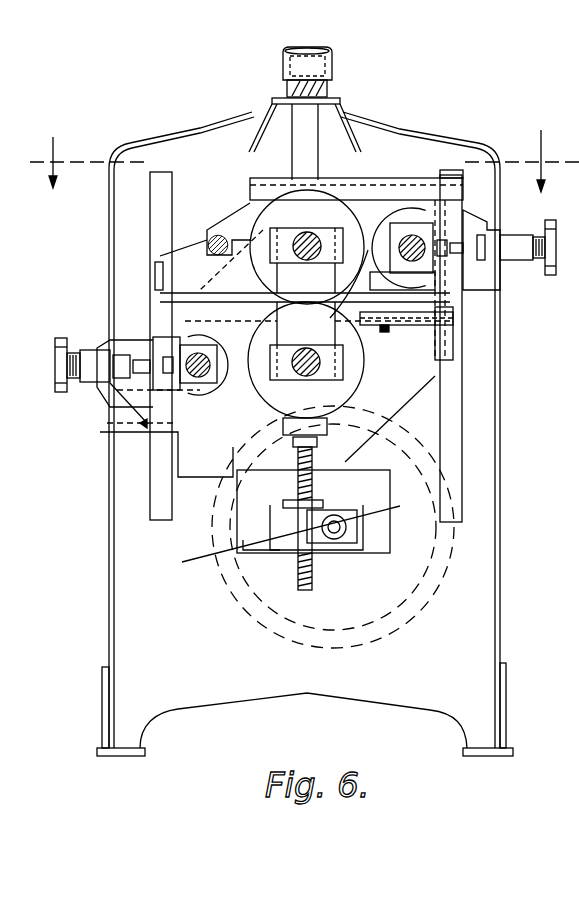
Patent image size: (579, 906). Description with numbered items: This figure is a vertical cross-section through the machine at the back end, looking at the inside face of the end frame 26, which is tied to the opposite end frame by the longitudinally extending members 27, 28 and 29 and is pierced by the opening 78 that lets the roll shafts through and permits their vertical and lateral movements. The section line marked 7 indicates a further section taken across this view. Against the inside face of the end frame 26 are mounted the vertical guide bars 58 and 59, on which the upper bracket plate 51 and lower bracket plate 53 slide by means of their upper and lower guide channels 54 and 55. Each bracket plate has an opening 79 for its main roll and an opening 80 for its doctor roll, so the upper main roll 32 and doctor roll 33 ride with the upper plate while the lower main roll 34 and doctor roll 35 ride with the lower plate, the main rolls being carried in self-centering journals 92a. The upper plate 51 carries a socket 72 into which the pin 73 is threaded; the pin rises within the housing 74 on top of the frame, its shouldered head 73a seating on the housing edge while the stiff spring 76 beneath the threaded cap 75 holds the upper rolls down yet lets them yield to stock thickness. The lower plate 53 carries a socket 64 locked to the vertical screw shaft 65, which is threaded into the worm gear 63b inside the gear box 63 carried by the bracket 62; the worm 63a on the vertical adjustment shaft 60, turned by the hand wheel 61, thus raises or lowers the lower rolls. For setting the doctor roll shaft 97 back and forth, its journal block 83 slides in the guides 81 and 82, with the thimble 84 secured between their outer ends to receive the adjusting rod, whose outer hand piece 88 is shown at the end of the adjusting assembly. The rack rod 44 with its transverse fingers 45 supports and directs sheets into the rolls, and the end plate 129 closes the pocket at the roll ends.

The end frame 26 is at (305, 434).
The longitudinally extending member 27 is at (383, 120).
The longitudinally extending member 28 is at (107, 660).
The longitudinally extending member 29 is at (506, 682).
The section line 7- 7 is at (304, 161).
The main roll 32 is at (250, 206).
The doctor roll 33 is at (463, 297).
The main roll 34 is at (450, 419).
The doctor roll 35 is at (207, 412).
The longitudinal rod or bar 44 is at (389, 330).
The transverse fingers 45 is at (467, 313).
The upper bracket plate 51 is at (190, 253).
The lower bracket plate 53 is at (222, 425).
The upper guide channel 54 is at (447, 190).
The lower guide channel 55 is at (153, 276).
The vertical guide bar 58 is at (158, 500).
The vertical guide bar 59 is at (450, 463).
The vertical adjustment shaft 60 is at (335, 540).
The hand wheel 61 is at (447, 573).
The bracket 62 is at (393, 532).
The gear box 63 is at (279, 540).
The worm 63a is at (414, 506).
The worm gear 63b is at (235, 588).
The socket 64 is at (316, 440).
The vertical screw shaft 65 is at (312, 490).
The socket 72 is at (283, 180).
The pin 73 is at (306, 150).
The shouldered head 73a is at (334, 62).
The housing 74 is at (289, 90).
The cap 75 is at (283, 62).
The stiff spring 76 is at (322, 50).
The opening 78 is at (398, 418).
The opening for main roll 79 is at (282, 280).
The opening for doctor roll 80 is at (383, 288).
The guide 81 is at (503, 278).
The guide 82 is at (500, 228).
The journal block 83 is at (307, 301).
The thimble 84 is at (524, 262).
The handwheel 88 is at (552, 236).
The journals 92a is at (287, 393).
The doctor roll shaft 97 is at (412, 236).
The end plate 129 is at (381, 172).